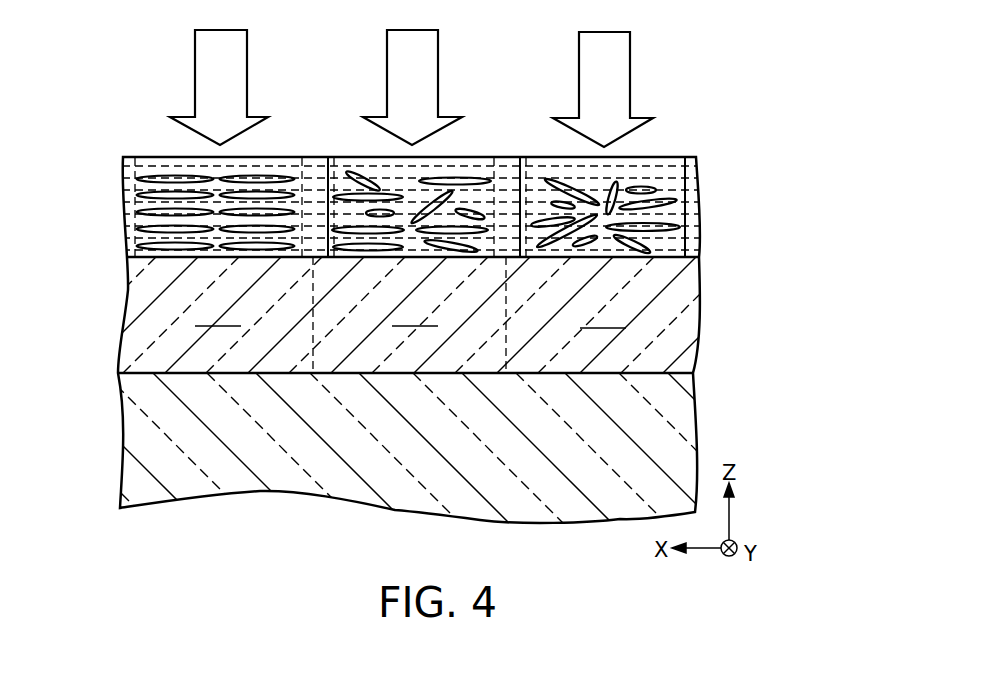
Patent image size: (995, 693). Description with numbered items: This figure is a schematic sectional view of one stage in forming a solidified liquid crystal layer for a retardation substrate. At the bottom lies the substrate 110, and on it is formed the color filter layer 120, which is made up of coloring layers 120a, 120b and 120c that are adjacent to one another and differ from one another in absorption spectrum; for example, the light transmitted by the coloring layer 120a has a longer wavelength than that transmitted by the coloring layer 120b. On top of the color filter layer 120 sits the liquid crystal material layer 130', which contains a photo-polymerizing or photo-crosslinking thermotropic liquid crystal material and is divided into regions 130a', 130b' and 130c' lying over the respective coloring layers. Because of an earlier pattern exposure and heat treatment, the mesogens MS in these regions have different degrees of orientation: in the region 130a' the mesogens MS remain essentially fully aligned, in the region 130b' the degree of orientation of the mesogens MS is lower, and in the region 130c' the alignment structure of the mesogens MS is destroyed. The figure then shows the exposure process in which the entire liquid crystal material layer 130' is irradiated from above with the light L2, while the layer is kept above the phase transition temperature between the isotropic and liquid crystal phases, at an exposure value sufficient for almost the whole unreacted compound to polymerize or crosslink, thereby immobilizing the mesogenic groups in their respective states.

The light L2 is at (195, 63).
The liquid crystal material layer 130' is at (372, 171).
The region of the liquid crystal material layer 130a' is at (231, 171).
The region of the liquid crystal material layer 130b' is at (427, 171).
The region of the liquid crystal material layer 130c' is at (610, 171).
The mesogens MS is at (413, 191).
The color filter layer 120 is at (112, 328).
The coloring layer 120a is at (254, 315).
The coloring layer 120b is at (449, 315).
The coloring layer 120c is at (576, 292).
The substrate 110 is at (305, 487).